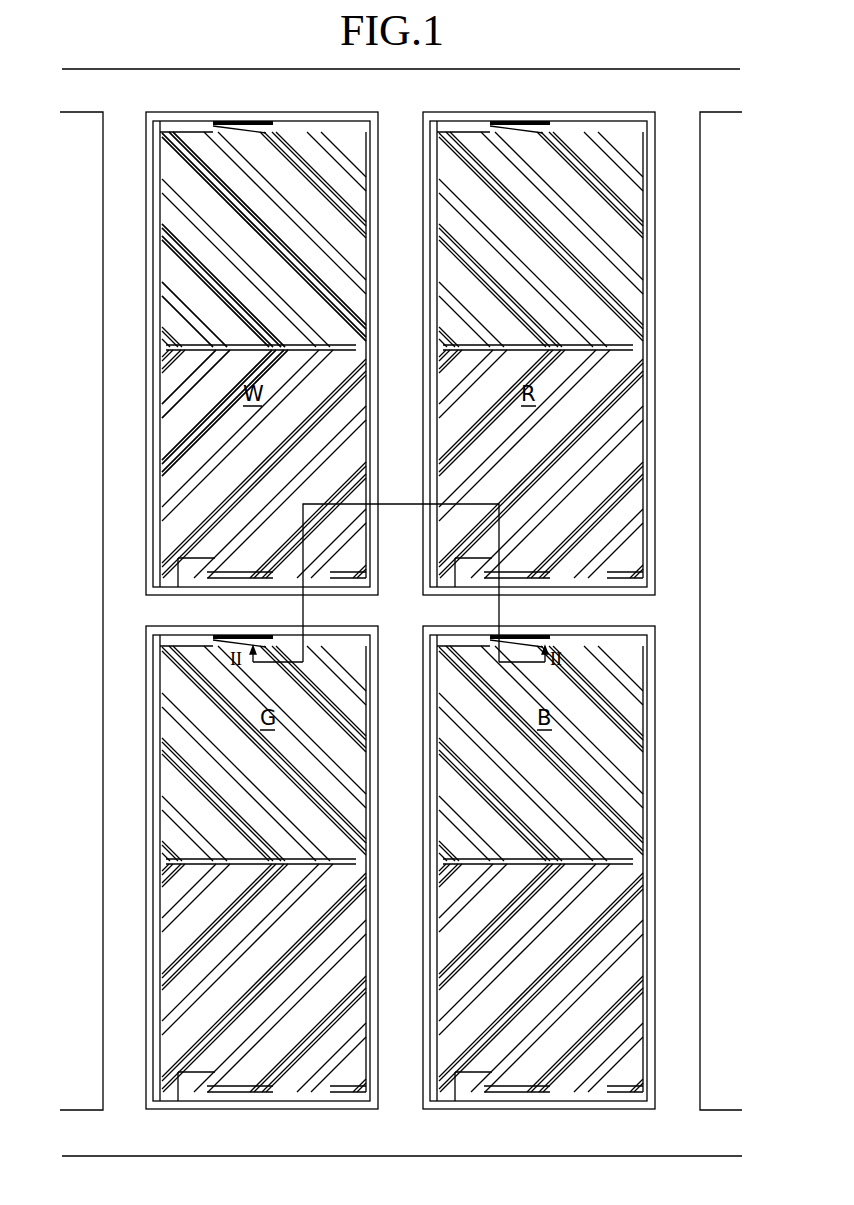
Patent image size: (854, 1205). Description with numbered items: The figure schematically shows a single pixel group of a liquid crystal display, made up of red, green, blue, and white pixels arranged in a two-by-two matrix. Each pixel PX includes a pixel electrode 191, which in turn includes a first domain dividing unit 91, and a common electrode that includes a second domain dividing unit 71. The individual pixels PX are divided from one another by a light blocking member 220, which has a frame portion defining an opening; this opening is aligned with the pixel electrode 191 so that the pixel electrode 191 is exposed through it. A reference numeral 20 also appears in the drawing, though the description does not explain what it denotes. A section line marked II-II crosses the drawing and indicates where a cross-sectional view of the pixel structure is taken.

The pixel electrode 191 is at (153, 157).
The branch electrode 20 is at (160, 258).
The first domain dividing unit 91 is at (160, 318).
The second domain dividing unit 71 is at (183, 423).
The light blocking member 220 is at (685, 196).
The pixel PX is at (200, 120).